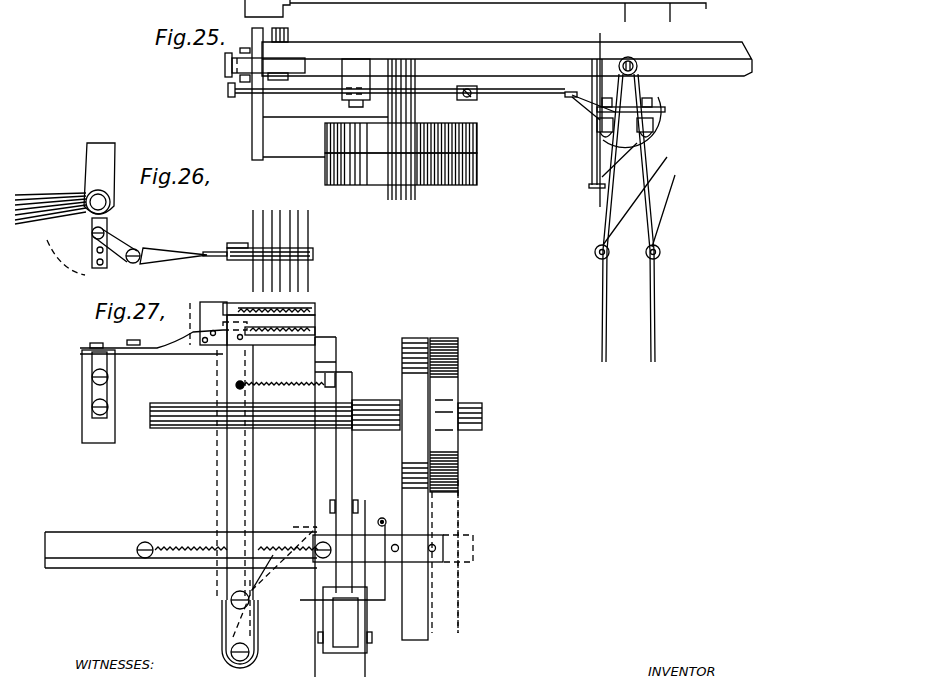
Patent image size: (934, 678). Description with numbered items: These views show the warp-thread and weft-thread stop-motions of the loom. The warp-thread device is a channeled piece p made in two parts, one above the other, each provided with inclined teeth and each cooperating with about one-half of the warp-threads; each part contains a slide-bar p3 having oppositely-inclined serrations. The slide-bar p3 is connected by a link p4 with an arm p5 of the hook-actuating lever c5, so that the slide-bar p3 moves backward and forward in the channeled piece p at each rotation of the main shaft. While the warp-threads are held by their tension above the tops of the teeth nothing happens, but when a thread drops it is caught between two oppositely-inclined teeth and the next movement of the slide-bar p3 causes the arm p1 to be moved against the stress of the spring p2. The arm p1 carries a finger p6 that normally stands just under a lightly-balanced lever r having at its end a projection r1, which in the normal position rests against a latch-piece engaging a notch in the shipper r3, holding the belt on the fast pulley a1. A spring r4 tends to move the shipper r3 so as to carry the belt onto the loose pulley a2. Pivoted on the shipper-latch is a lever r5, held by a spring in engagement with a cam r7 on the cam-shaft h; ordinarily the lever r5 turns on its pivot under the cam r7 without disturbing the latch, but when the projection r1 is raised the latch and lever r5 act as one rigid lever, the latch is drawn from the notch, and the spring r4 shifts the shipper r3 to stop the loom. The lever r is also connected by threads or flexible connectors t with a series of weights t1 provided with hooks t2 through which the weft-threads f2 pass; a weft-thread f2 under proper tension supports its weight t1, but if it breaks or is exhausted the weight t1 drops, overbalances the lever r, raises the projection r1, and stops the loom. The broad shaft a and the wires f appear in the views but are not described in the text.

In FIG. 25, the cam-shaft h is at (289, 36).
In FIG. 27, the cam-shaft h is at (150, 413).
In FIG. 25, the lightly-balanced lever r is at (322, 98).
In FIG. 27, the lightly-balanced lever r is at (345, 618).
In FIG. 25, the projection r1 is at (229, 80).
In FIG. 27, the projection r1 is at (316, 600).
In FIG. 25, the shipper r3 is at (298, 152).
In FIG. 27, the shipper r3 is at (393, 556).
In FIG. 27, the spring r4 is at (193, 546).
In FIG. 25, the lever r5 is at (226, 62).
In FIG. 27, the lever r5 is at (343, 474).
In FIG. 25, the cam r7 is at (268, 65).
In FIG. 25, the shaft a is at (414, 113).
In FIG. 27, the shaft a is at (378, 404).
In FIG. 25, the fast pulley a1 is at (401, 138).
In FIG. 27, the fast pulley a1 is at (402, 357).
In FIG. 25, the loose pulley a2 is at (401, 169).
In FIG. 27, the loose pulley a2 is at (444, 485).
In FIG. 25, the flexible connectors t is at (568, 102).
In FIG. 25, the weights t1 is at (643, 97).
In FIG. 25, the hooks t2 is at (648, 128).
In FIG. 25, the weft-threads f2 is at (655, 156).
In FIG. 26, the hook-actuating lever c5 is at (65, 183).
In FIG. 26, the channeled piece p is at (248, 262).
In FIG. 27, the channeled piece p is at (316, 326).
In FIG. 26, the arm p1 is at (236, 243).
In FIG. 27, the arm p1 is at (257, 492).
In FIG. 27, the spring p2 is at (287, 384).
In FIG. 26, the slide-bar p3 is at (313, 254).
In FIG. 27, the slide-bar p3 is at (316, 308).
In FIG. 26, the link p4 is at (163, 252).
In FIG. 27, the link p4 is at (162, 351).
In FIG. 26, the arm p5 is at (85, 270).
In FIG. 27, the finger p6 is at (307, 532).
In FIG. 26, the wires f is at (305, 226).
In FIG. 27, the wires f is at (303, 305).